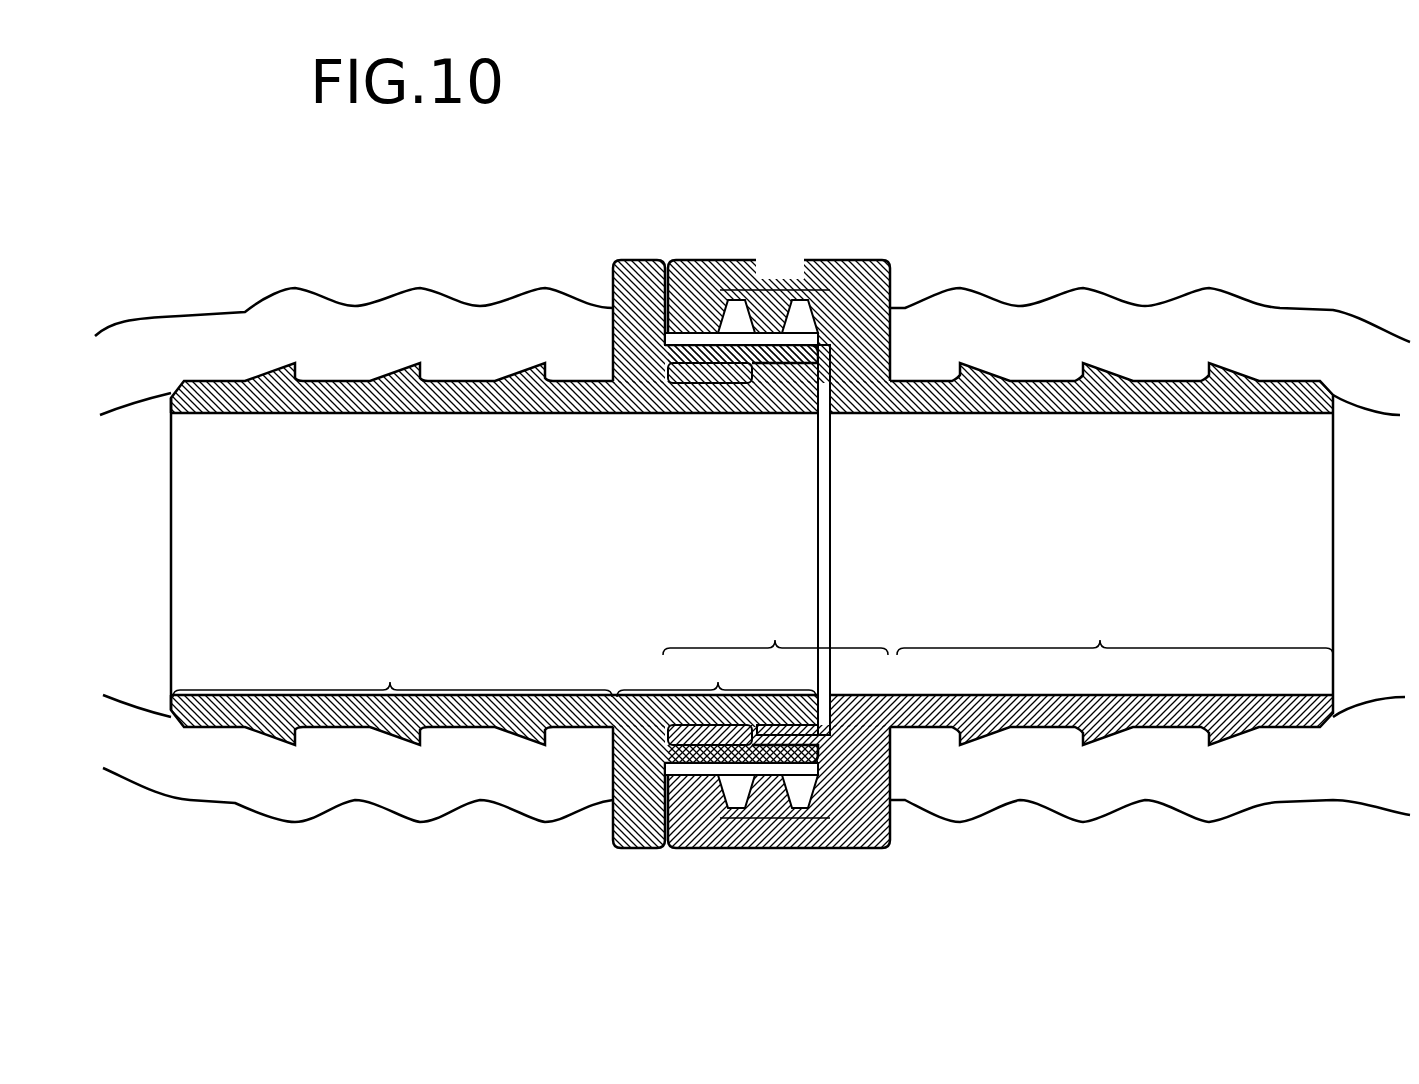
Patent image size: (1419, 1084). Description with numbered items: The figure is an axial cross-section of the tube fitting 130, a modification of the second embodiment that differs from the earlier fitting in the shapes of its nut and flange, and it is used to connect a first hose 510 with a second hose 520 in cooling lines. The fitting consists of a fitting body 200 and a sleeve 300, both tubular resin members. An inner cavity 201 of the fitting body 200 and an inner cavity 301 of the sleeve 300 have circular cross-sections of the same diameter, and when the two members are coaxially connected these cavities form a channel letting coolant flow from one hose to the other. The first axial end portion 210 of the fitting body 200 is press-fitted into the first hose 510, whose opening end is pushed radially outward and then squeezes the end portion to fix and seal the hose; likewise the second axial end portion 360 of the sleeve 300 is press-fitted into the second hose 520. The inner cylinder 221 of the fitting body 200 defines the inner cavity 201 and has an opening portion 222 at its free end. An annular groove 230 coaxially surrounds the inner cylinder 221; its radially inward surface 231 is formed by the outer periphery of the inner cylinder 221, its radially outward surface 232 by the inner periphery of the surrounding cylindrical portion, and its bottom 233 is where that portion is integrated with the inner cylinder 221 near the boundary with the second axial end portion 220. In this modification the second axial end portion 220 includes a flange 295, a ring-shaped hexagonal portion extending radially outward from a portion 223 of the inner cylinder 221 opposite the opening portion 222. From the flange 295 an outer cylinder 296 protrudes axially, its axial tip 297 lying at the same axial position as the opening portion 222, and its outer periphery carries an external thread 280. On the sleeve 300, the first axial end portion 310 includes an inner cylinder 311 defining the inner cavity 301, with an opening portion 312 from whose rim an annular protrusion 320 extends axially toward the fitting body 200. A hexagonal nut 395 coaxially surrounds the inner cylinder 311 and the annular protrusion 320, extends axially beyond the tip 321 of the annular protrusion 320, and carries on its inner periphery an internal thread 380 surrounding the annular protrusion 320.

The tube fitting 130 is at (992, 178).
The fitting body 200 is at (500, 475).
The inner cavity 201 is at (363, 561).
The first axial end portion 210 is at (392, 554).
The second axial end portion 220 is at (715, 554).
The inner cylinder 221 is at (727, 413).
The opening portion 222 is at (812, 413).
The portion 223 is at (667, 372).
The annular groove 230 is at (610, 362).
The radially inward surface 231 is at (693, 385).
The radially outward surface 232 is at (693, 387).
The bottom 233 is at (640, 385).
The external thread 280 is at (700, 384).
The flange 295 is at (640, 260).
The outer cylinder 296 is at (690, 260).
The axial tip 297 is at (848, 262).
The sleeve 300 is at (979, 521).
The inner cavity 301 is at (1193, 551).
The first axial end portion 310 is at (776, 554).
The inner cylinder 311 is at (855, 400).
The opening portion 312 is at (832, 415).
The annular protrusion 320 is at (770, 420).
The tip 321 is at (730, 790).
The second axial end portion 360 is at (1111, 554).
The internal thread 380 is at (785, 292).
The nut 395 is at (855, 850).
The first hose 510 is at (243, 300).
The second hose 520 is at (1237, 292).